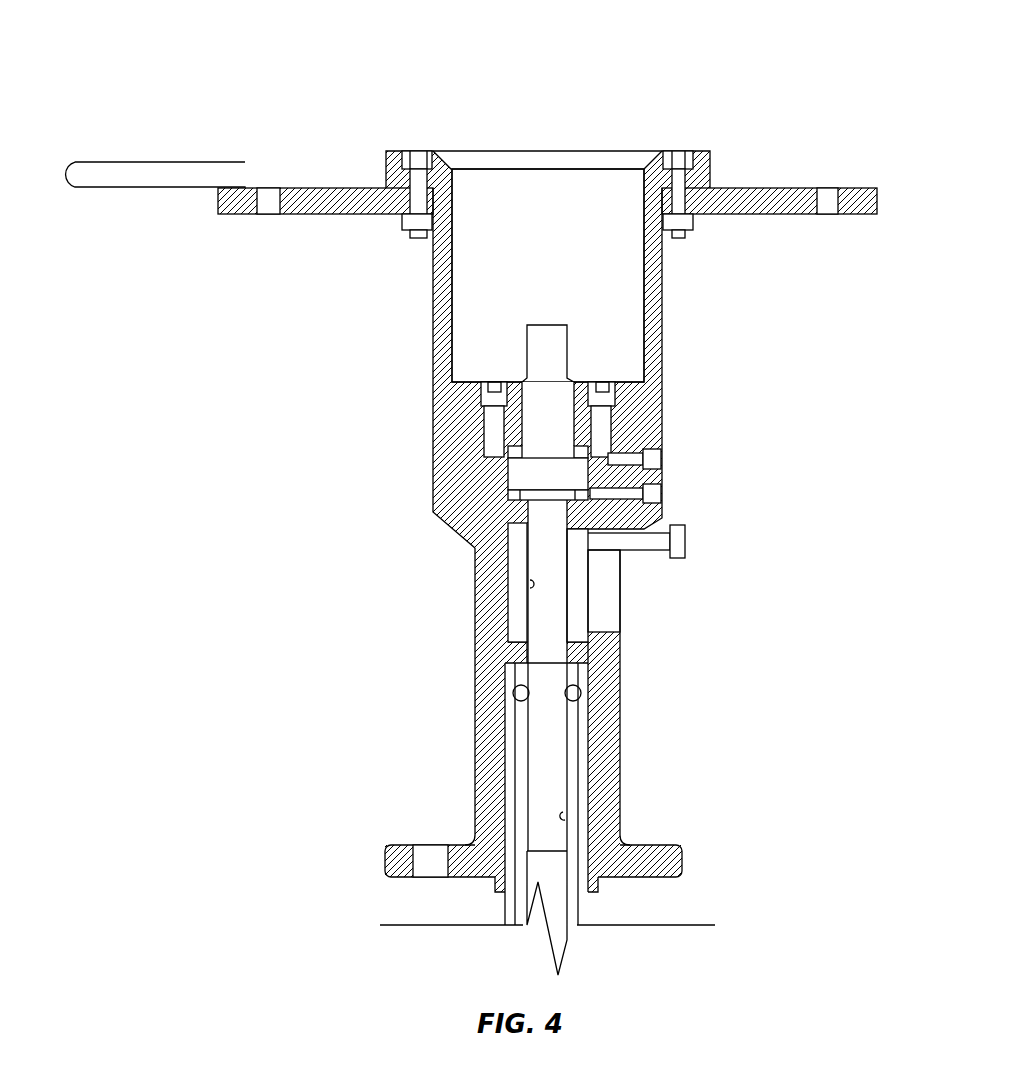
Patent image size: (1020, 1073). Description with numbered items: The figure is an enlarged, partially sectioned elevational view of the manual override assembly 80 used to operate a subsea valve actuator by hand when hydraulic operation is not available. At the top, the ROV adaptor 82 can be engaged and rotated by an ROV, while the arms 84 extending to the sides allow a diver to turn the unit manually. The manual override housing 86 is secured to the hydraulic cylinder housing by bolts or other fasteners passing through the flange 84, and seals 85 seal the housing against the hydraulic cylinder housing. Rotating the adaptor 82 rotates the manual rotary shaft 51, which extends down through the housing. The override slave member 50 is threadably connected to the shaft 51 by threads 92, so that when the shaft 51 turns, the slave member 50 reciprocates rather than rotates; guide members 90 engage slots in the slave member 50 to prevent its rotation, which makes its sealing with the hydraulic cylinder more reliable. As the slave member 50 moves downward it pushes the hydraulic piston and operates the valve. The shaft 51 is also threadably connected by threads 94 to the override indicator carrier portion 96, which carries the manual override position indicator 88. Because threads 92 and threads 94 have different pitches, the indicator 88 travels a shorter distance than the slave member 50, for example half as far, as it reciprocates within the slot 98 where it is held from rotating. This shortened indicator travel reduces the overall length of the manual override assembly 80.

The manual override assembly 80 is at (768, 100).
The ROV adaptor 82 is at (653, 317).
The flange 84 is at (125, 170).
The seals 85 is at (494, 883).
The manual override housing 86 is at (490, 720).
The manual override position indicator 88 is at (650, 543).
The guide members 90 is at (516, 694).
The threads 92 is at (566, 815).
The threads 94 is at (528, 587).
The override indicator carrier portion 96 is at (517, 530).
The slot 98 is at (600, 621).
The manual rotary shaft 51 is at (550, 762).
The override slave member 50 is at (580, 913).